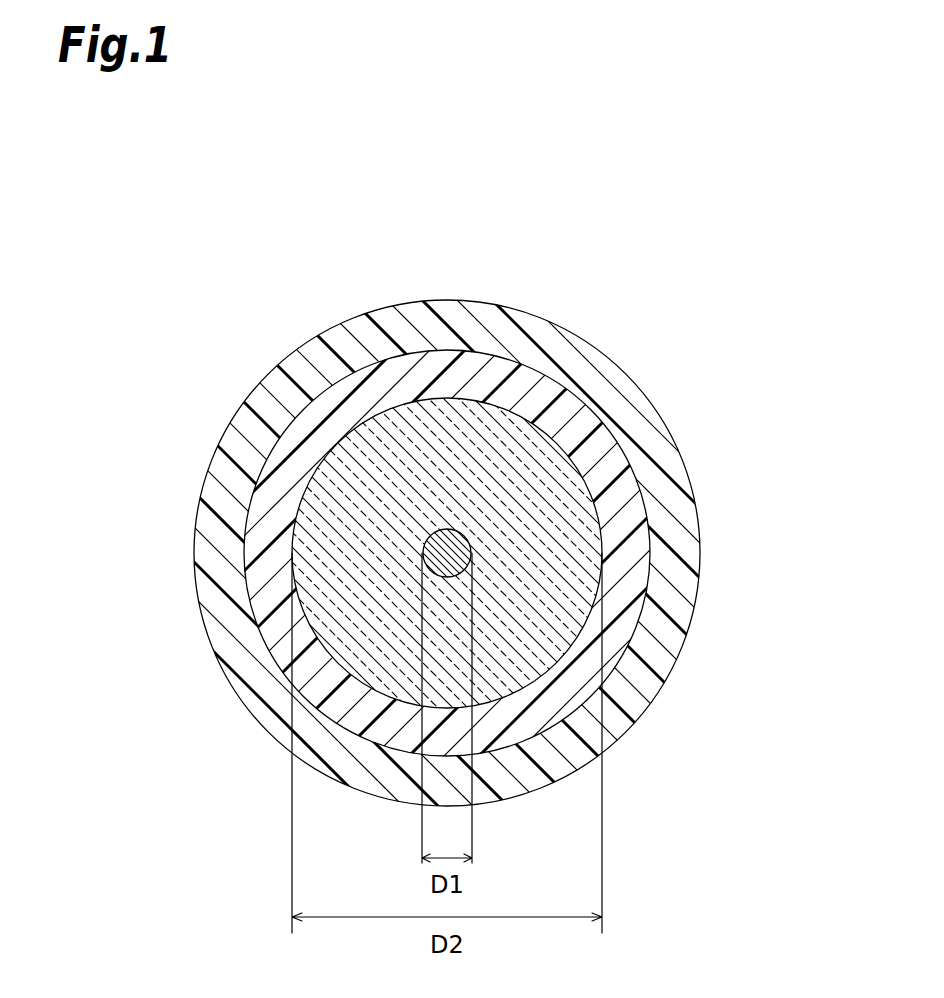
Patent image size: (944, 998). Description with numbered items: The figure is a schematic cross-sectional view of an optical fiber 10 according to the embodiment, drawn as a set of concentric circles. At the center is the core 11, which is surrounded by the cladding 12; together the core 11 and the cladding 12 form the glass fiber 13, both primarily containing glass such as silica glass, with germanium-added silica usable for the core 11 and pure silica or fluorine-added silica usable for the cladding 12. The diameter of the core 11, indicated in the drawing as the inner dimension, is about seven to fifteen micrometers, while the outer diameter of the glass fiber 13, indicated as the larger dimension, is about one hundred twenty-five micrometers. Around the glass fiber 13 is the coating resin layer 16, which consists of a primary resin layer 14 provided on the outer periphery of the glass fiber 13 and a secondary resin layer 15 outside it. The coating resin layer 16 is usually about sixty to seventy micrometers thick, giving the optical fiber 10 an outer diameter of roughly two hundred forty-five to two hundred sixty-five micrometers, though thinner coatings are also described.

The optical fiber 10 is at (230, 240).
The core 11 is at (435, 563).
The cladding 12 is at (568, 527).
The glass fiber 13 is at (668, 292).
The primary resin layer 14 is at (640, 572).
The secondary resin layer 15 is at (675, 637).
The coating resin layer 16 is at (792, 572).